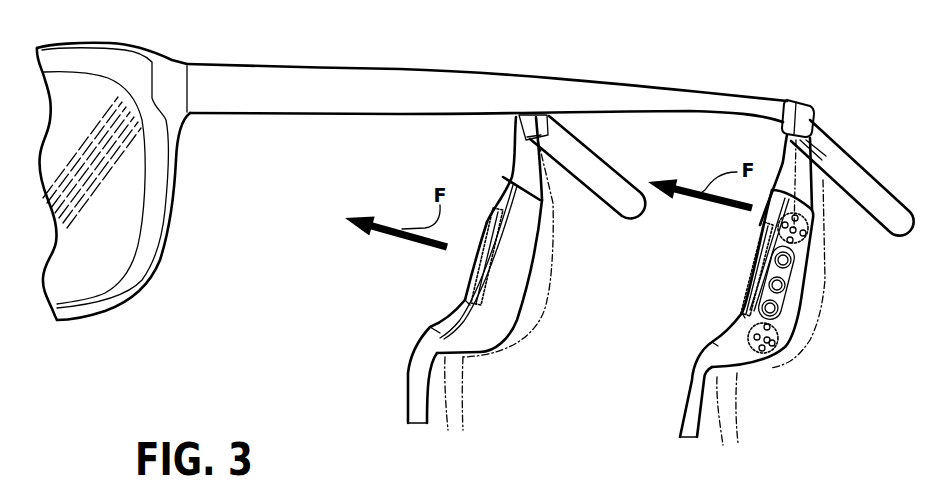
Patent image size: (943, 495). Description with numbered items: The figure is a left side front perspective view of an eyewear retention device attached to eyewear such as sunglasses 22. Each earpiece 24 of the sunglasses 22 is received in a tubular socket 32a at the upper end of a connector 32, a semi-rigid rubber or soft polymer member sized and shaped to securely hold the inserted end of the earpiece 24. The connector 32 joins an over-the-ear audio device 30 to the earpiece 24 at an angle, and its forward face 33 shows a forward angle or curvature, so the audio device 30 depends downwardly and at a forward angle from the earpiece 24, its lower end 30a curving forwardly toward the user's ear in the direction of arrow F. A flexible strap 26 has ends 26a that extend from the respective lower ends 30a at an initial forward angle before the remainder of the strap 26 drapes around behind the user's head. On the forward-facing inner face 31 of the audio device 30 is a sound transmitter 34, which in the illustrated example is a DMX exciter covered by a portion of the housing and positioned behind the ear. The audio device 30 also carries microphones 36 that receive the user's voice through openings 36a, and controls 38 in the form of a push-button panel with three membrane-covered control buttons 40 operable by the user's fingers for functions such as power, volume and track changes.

The sunglasses 22 is at (80, 62).
The earpiece 24 is at (565, 148).
The flexible strap 26 is at (413, 397).
The strap end 26a is at (427, 343).
The over-the-ear audio device 30 is at (525, 262).
The lower end of audio device 30a is at (460, 310).
The forward-facing inner face 31 is at (487, 222).
The connector 32 is at (553, 113).
The tubular socket 32a is at (530, 113).
The forward face of connector 33 is at (511, 148).
The sound transmitter 34 is at (467, 273).
The microphone 36 is at (792, 340).
The openings 36a is at (812, 265).
The controls 38 is at (762, 292).
The control buttons 40 is at (787, 264).